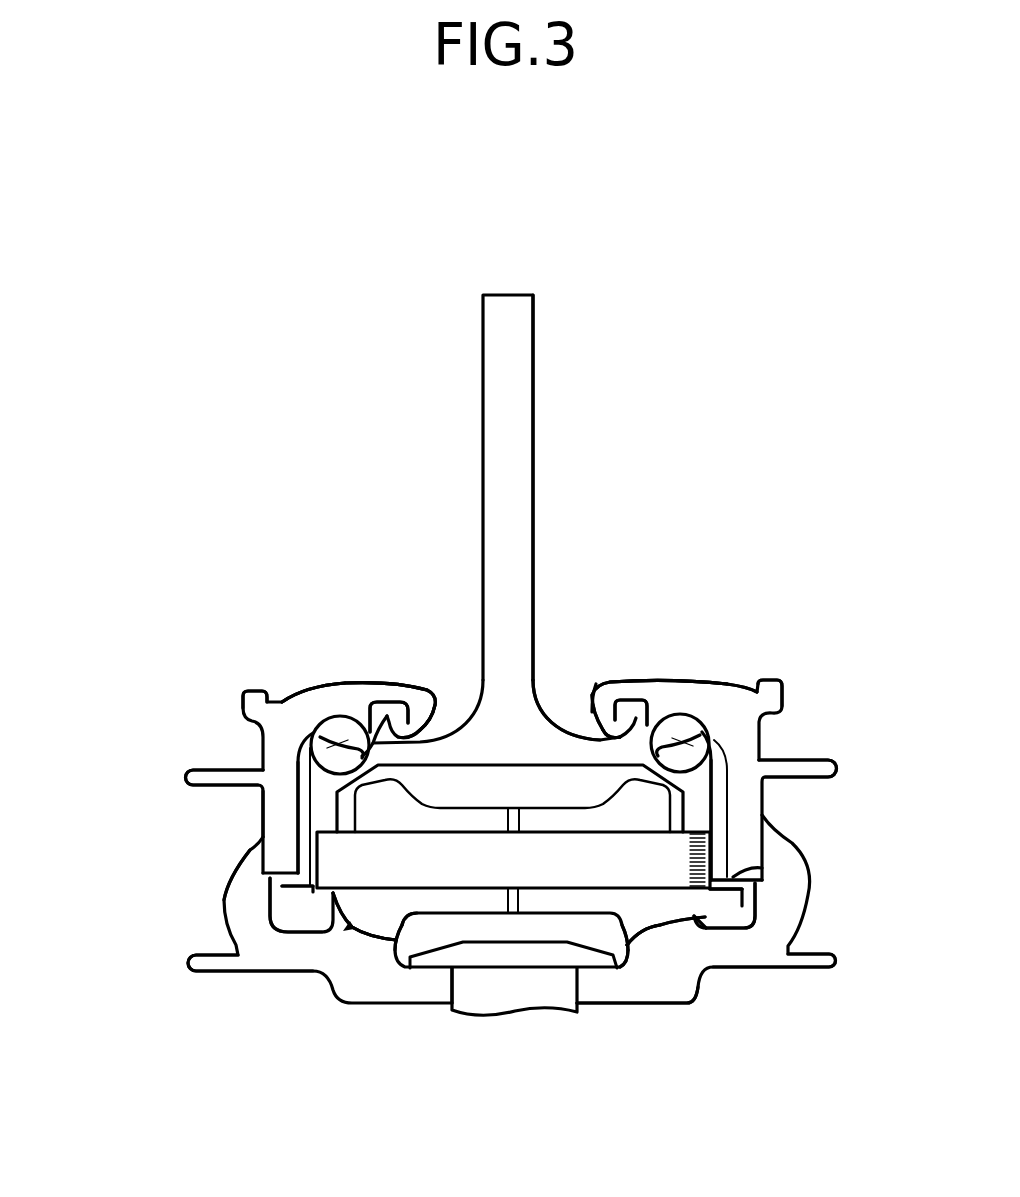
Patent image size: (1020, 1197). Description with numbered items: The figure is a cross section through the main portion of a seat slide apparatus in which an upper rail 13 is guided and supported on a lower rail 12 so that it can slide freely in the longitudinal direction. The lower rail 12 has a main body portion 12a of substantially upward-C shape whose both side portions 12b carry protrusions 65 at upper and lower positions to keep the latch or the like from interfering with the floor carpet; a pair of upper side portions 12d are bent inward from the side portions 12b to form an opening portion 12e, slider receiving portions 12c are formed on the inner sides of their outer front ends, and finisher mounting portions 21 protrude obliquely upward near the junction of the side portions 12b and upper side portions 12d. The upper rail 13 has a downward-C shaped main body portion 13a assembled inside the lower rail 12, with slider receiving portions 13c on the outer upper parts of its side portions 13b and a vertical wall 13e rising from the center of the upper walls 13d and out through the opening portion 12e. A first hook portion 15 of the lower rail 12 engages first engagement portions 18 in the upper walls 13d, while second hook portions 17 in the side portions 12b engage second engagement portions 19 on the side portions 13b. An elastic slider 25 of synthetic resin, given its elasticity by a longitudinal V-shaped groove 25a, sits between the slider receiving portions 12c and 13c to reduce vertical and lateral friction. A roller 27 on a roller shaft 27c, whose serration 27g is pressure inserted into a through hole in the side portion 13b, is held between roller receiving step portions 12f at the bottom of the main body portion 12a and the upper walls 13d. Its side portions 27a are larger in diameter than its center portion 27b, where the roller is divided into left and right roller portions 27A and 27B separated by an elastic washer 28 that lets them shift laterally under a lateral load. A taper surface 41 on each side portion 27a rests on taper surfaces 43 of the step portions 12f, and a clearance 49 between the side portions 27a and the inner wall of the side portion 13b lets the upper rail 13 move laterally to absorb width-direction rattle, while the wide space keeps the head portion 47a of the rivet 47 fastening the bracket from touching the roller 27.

The lower rail 12 is at (283, 873).
The main body portion 12a is at (263, 838).
The side portions 12b is at (283, 813).
The slider receiving portions 12c is at (315, 725).
The upper side portions 12d is at (330, 727).
The opening portion 12e is at (572, 700).
The roller receiving step portions 12f is at (655, 968).
The upper rail 13 is at (487, 430).
The main body portion 13a is at (296, 778).
The side portions 13b is at (730, 800).
The slider receiving portions 13c is at (712, 783).
The upper walls 13d is at (535, 732).
The vertical wall 13e is at (537, 408).
The first hook portion 15 is at (423, 697).
The second hook portions 17 is at (283, 895).
The first engagement portions 18 is at (377, 700).
The second engagement portions 19 is at (270, 920).
The finisher mounting portions 21 is at (250, 693).
The slider 25 is at (263, 715).
The V-shaped groove 25a is at (340, 720).
The roller 27 is at (480, 915).
The left roller portion 27A is at (348, 933).
The right roller portion 27B is at (610, 915).
The side portions 27a is at (385, 948).
The center portion 27b is at (548, 950).
The roller shaft 27c is at (660, 935).
The serration 27g is at (715, 892).
The elastic washer 28 is at (500, 945).
The taper surface 41 is at (370, 940).
The taper surfaces 43 is at (355, 935).
The rivet 47 is at (468, 1003).
The head portion 47a is at (427, 965).
The clearance 49 is at (338, 905).
The protrusion 65 is at (187, 778).